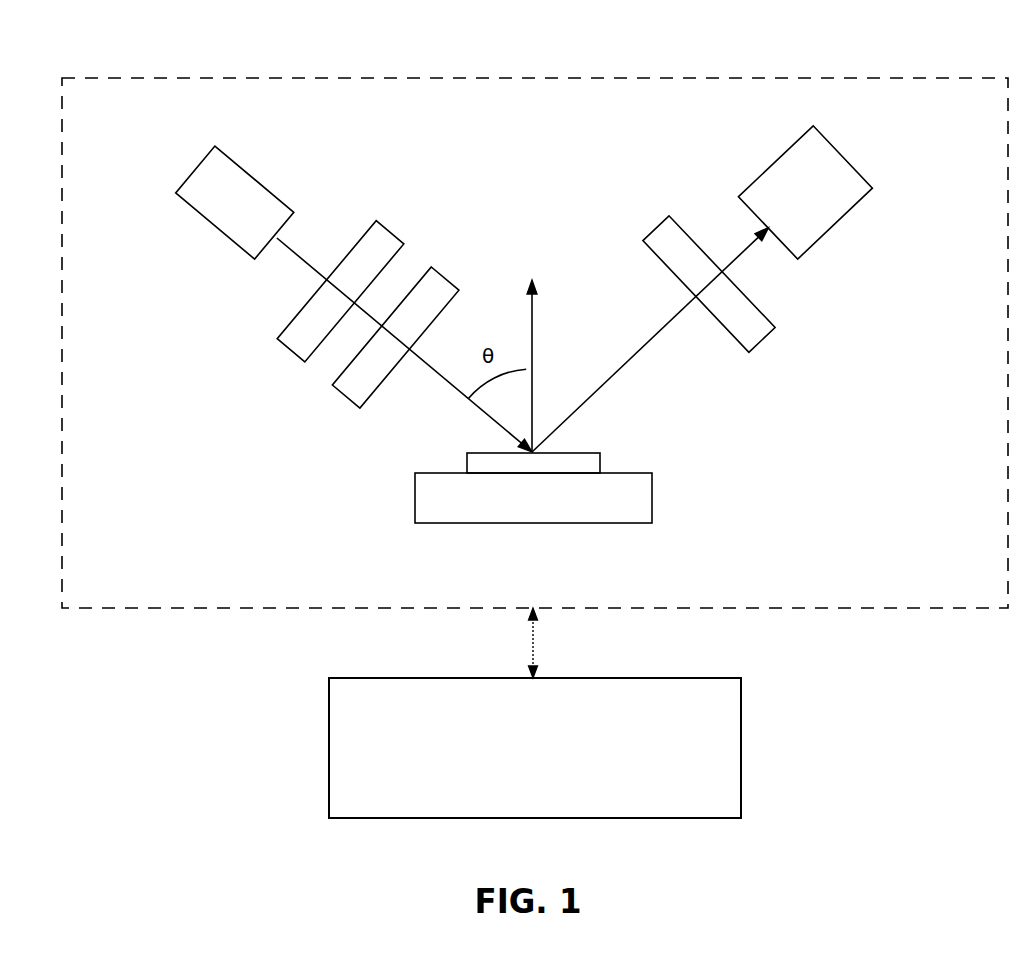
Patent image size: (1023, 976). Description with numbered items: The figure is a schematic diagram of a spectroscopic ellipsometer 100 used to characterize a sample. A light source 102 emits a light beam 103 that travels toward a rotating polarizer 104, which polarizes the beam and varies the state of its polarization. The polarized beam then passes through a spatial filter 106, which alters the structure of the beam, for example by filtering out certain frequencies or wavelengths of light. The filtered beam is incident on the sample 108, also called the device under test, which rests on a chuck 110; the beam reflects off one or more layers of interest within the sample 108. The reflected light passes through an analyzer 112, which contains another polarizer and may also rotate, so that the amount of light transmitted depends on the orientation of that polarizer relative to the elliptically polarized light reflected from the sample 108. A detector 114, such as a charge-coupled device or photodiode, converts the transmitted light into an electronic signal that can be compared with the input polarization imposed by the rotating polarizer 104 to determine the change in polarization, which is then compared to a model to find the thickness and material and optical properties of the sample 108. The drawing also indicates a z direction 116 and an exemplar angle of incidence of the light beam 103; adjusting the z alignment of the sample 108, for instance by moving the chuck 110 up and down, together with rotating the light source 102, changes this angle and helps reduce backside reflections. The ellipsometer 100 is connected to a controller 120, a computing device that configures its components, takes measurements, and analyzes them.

The spectroscopic ellipsometer 100 is at (940, 77).
The light source 102 is at (248, 173).
The light beam 103 is at (287, 243).
The rotating polarizer 104 is at (388, 232).
The spatial filter 106 is at (443, 275).
The sample 108 is at (600, 453).
The chuck 110 is at (652, 488).
The analyzer 112 is at (760, 310).
The detector 114 is at (847, 155).
The z direction 116 is at (533, 343).
The controller 120 is at (517, 776).